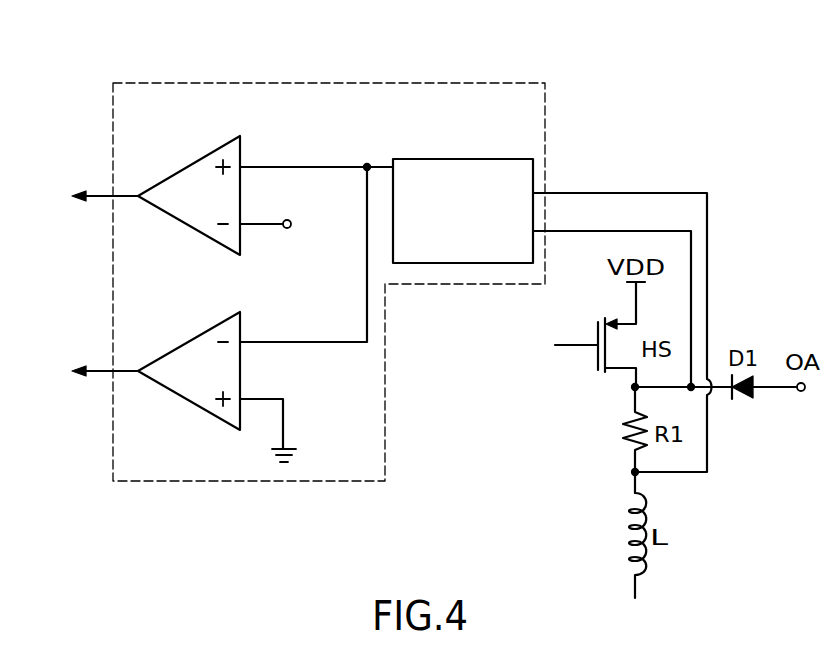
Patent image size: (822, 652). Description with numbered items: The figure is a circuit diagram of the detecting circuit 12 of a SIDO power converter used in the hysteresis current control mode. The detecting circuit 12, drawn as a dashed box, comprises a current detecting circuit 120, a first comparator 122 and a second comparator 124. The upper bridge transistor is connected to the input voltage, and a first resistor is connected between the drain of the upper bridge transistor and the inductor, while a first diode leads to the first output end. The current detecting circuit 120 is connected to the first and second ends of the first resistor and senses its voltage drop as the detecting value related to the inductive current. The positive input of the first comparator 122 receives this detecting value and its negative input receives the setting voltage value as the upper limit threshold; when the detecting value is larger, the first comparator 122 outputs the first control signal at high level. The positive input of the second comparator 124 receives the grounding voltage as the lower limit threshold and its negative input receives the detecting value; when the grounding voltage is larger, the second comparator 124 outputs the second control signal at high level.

The detecting circuit 12 is at (323, 82).
The current detecting circuit 120 is at (462, 157).
The first comparator 122 is at (189, 163).
The second comparator 124 is at (189, 338).